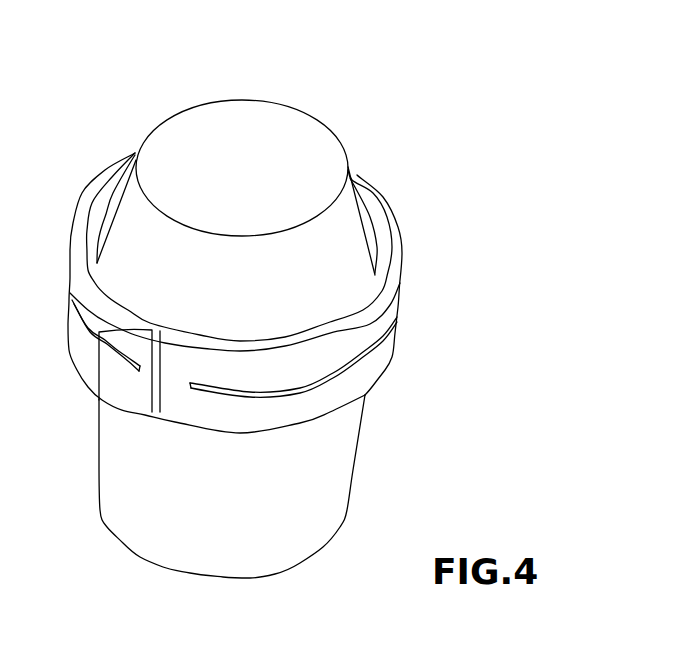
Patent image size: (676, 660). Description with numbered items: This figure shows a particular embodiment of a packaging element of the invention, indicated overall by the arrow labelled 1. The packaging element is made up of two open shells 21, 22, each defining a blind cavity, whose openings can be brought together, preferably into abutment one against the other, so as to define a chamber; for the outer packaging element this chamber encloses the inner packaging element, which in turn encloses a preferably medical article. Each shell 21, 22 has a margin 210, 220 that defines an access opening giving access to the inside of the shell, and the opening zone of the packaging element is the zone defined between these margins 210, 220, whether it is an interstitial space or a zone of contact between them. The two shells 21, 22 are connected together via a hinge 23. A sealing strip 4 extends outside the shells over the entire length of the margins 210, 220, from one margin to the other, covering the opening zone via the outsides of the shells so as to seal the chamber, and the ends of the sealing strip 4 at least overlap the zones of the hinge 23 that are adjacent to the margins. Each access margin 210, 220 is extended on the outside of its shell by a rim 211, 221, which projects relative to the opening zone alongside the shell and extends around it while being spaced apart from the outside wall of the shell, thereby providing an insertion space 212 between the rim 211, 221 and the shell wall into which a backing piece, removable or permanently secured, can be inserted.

The container assembly 1 is at (544, 204).
The shell 21 is at (247, 131).
The rim 211 is at (386, 226).
The insertion space 212 is at (105, 213).
The margin 210 is at (277, 384).
The margin 220 is at (250, 397).
The rim 221 is at (383, 375).
The shell 22 is at (140, 520).
The hinge 23 is at (165, 385).
The sealing strip 4 is at (98, 400).